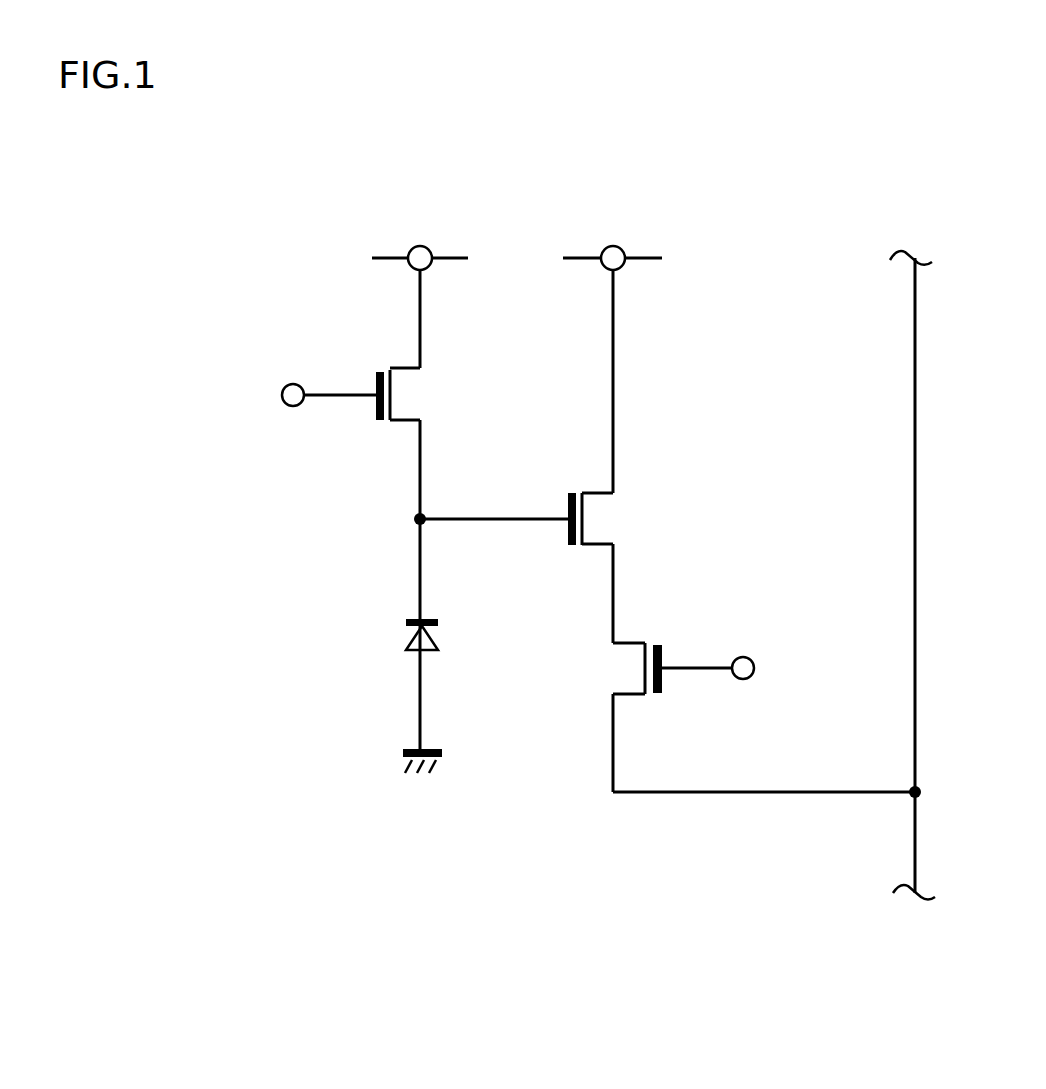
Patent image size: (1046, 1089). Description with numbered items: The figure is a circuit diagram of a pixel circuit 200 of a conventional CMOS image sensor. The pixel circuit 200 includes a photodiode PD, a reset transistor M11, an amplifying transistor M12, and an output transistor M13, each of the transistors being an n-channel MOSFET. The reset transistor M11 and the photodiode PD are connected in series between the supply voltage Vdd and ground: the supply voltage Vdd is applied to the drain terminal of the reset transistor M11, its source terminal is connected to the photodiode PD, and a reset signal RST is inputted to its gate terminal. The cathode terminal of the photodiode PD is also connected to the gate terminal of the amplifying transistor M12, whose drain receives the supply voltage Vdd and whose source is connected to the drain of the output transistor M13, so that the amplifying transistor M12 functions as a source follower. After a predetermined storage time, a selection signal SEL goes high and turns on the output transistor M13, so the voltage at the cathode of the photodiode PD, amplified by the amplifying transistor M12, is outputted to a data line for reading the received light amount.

The pixel circuit 200 is at (650, 1047).
The reset transistor M11 is at (404, 545).
The amplifying transistor M12 is at (558, 456).
The output transistor M13 is at (672, 717).
The photodiode PD is at (451, 636).
The supply voltage Vdd is at (380, 299).
The reset signal RST is at (253, 396).
The selection signal SEL is at (780, 670).